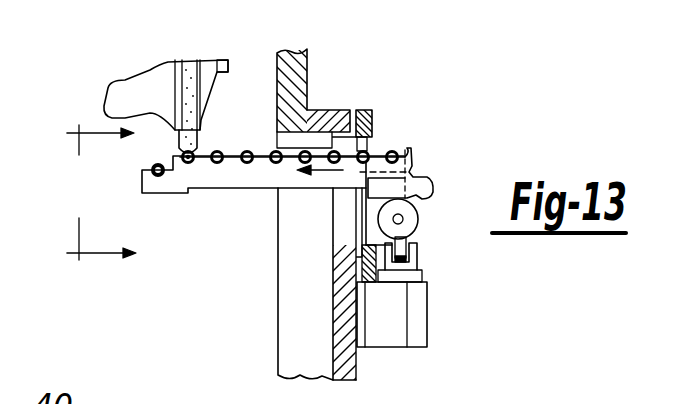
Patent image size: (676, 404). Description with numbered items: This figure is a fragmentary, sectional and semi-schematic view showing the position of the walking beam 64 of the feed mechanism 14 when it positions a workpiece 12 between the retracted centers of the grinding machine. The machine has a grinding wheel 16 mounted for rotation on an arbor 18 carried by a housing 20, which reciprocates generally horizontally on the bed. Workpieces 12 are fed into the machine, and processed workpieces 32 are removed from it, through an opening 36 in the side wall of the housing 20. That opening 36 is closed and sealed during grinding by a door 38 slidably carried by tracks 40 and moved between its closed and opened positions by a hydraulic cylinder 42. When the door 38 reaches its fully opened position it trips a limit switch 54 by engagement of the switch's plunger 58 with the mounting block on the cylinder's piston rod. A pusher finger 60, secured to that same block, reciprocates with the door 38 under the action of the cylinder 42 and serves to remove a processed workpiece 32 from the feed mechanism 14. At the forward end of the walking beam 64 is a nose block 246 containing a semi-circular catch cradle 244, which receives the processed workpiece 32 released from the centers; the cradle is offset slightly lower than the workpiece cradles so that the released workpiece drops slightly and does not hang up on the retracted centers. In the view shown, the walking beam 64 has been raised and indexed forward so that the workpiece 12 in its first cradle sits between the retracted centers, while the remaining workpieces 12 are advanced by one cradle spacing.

The workpiece 12 is at (277, 150).
The feed mechanism 14 is at (86, 187).
The grinding wheel 16 is at (203, 22).
The arbor 18 is at (229, 76).
The housing 20 is at (307, 80).
The processed workpiece 32 is at (165, 155).
The opening 36 is at (342, 235).
The door 38 is at (356, 207).
The tracks 40 is at (372, 120).
The hydraulic cylinder 42 is at (419, 218).
The limit switch 54 is at (428, 332).
The plunger 58 is at (420, 264).
The pusher finger 60 is at (434, 185).
The walking beam 64 is at (218, 193).
The catch cradle 244 is at (147, 165).
The nose block 246 is at (140, 192).